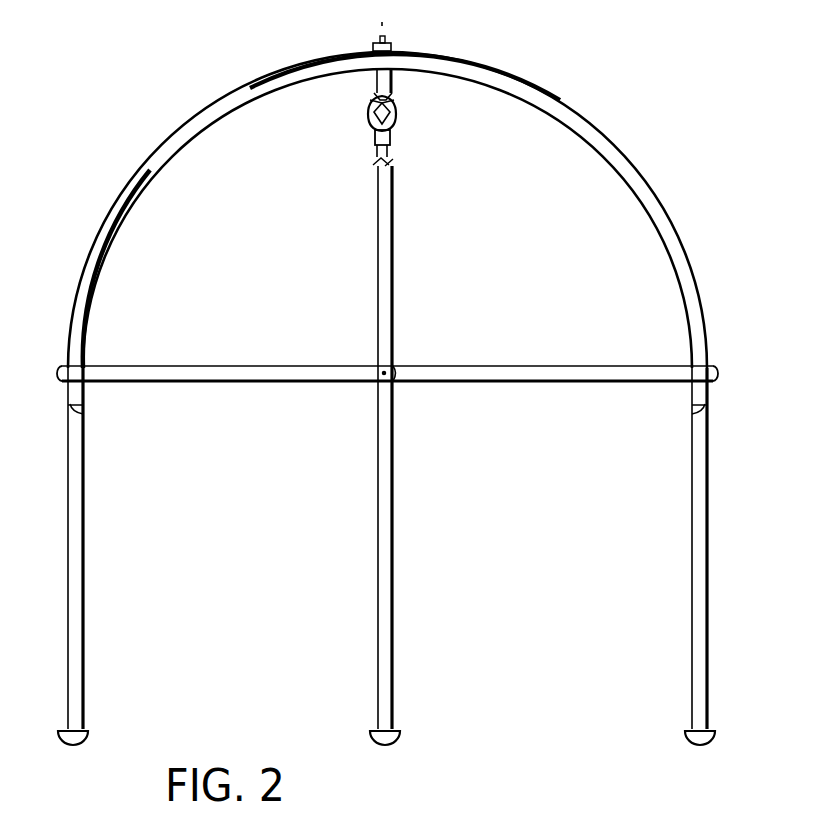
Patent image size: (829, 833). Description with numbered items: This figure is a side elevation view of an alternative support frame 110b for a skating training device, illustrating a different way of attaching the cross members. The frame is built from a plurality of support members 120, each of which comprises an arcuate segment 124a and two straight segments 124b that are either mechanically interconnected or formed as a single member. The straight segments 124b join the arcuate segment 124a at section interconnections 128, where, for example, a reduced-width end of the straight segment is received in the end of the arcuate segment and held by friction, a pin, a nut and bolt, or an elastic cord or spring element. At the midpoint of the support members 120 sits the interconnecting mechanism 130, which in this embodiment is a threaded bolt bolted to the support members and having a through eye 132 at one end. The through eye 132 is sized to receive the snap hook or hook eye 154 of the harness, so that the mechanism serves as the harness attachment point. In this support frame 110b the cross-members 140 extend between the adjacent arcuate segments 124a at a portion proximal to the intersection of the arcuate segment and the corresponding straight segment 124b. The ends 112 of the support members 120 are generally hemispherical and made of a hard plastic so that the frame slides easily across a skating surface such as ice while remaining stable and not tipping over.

The support frame 110b is at (655, 152).
The ends of support members 112 is at (402, 730).
The support member 120 is at (392, 268).
The arcuate segment 124a is at (139, 173).
The straight segment 124b is at (80, 612).
The section interconnection 128 is at (82, 414).
The interconnecting mechanism 130 is at (378, 48).
The through eye 132 is at (370, 103).
The cross-member 140 is at (240, 372).
The hook eye 154 is at (397, 112).